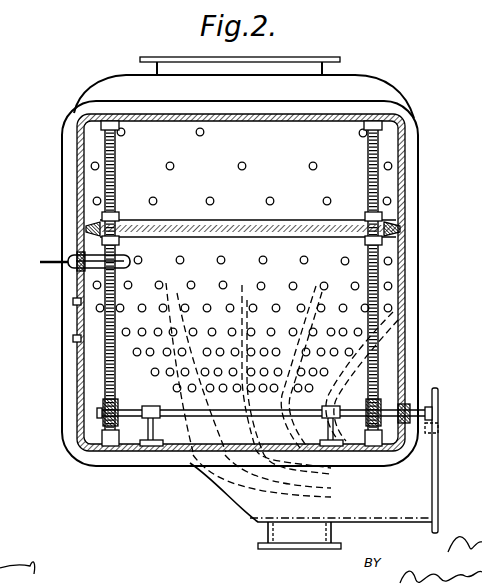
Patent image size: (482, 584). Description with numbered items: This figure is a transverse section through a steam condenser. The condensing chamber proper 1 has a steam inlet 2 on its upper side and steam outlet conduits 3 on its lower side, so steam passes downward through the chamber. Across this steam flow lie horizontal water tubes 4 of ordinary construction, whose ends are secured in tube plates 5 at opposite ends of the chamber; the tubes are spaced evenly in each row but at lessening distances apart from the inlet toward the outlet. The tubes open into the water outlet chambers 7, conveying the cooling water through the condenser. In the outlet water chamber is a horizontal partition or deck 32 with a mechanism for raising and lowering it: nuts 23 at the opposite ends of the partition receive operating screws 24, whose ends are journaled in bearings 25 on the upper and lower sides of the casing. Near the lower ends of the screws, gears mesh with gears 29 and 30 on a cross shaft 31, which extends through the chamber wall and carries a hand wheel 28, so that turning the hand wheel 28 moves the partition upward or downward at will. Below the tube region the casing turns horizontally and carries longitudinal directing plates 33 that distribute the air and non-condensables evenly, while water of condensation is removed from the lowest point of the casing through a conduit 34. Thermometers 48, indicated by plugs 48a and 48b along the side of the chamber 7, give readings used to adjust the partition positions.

The condensing chamber proper 1 is at (338, 88).
The steam inlet 2 is at (288, 56).
The steam outlet conduits 3 is at (458, 456).
The water tubes 4 is at (158, 199).
The tube plates 5 is at (347, 160).
The water outlet chambers 7 is at (92, 357).
The nuts 23 is at (117, 218).
The operating screws 24 is at (117, 191).
The bearings 25 is at (126, 130).
The hand wheel 28 is at (438, 407).
The gear 29 is at (117, 403).
The gear 30 is at (369, 407).
The cross shaft 31 is at (234, 411).
The partition or deck 32 is at (243, 219).
The longitudinal directing plates 33 is at (182, 303).
The conduit 34 is at (294, 541).
The thermometers 48 is at (50, 258).
The plug 48a is at (73, 306).
The plug 48b is at (73, 340).